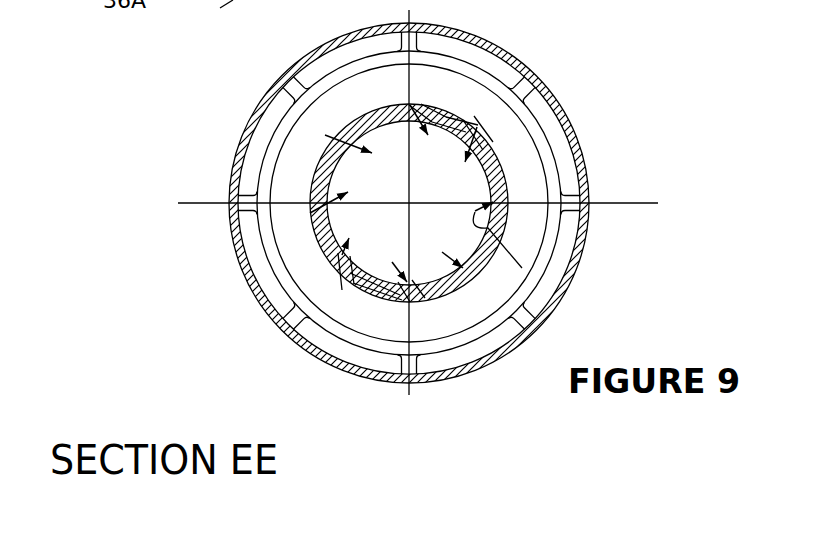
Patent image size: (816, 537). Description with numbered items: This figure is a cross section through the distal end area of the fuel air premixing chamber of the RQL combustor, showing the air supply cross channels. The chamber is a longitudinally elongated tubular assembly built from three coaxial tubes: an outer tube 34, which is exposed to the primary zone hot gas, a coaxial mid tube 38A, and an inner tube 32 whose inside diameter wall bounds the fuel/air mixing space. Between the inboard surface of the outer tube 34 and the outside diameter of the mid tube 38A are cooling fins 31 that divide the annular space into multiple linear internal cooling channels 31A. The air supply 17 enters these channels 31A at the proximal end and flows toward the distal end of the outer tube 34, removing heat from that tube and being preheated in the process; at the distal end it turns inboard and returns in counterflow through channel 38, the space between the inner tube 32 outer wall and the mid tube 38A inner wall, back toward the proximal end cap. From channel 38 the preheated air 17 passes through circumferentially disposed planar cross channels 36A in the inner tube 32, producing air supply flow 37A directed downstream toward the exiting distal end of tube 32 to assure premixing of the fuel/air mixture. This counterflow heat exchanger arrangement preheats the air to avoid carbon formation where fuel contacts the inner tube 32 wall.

The air supply 17 is at (209, 40).
The cooling fins 31 is at (525, 92).
The internal cooling means channels 31A is at (572, 171).
The inner tube 32 is at (445, 283).
The outer tube 34 is at (475, 42).
The circumferentially disposed planar cross channels 36A is at (337, 262).
The air supply flow 37A is at (487, 270).
The channel 38 is at (393, 322).
The mid tube 38A is at (543, 150).